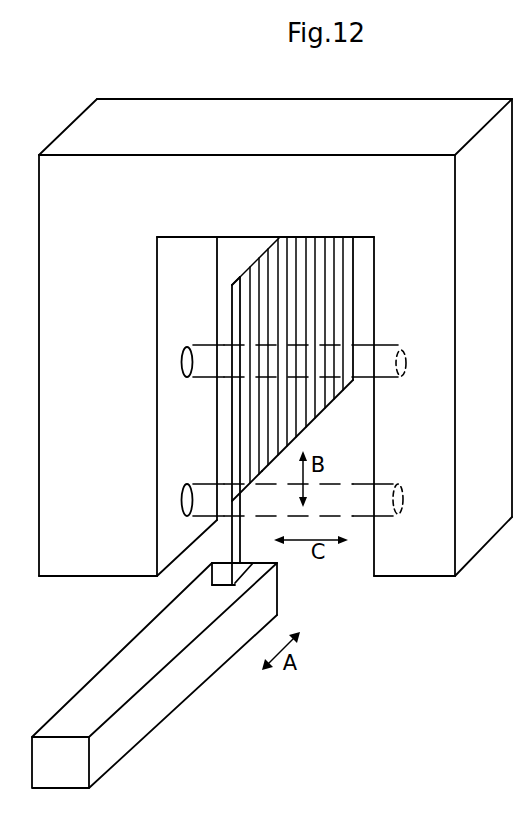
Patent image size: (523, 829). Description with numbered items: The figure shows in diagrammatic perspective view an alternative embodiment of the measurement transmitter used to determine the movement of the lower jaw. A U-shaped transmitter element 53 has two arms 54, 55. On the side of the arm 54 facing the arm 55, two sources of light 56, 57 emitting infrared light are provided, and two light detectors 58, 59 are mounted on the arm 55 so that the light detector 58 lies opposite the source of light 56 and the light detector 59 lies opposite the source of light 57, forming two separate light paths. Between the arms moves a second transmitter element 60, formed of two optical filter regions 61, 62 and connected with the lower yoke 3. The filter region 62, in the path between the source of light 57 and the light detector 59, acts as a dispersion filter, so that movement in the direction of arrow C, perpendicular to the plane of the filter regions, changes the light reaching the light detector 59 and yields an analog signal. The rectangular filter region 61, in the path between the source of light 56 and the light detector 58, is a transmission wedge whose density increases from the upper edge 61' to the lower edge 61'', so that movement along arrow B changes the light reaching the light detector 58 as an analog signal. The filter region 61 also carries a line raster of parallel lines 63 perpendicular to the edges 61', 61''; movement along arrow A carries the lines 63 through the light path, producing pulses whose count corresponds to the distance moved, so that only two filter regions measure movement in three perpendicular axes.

The lower yoke 3 is at (132, 732).
The transmitter element 53 is at (190, 117).
The arm 54 is at (90, 182).
The arm 55 is at (477, 528).
The source of light 56 is at (182, 353).
The source of light 57 is at (180, 504).
The light detector 58 is at (401, 346).
The light detector 59 is at (400, 511).
The transmitter element 60 is at (341, 580).
The filter region 61 is at (250, 377).
The upper edge 61' is at (201, 238).
The lower edge 61'' is at (265, 492).
The filter region 62 is at (240, 550).
The lines 63 is at (296, 264).